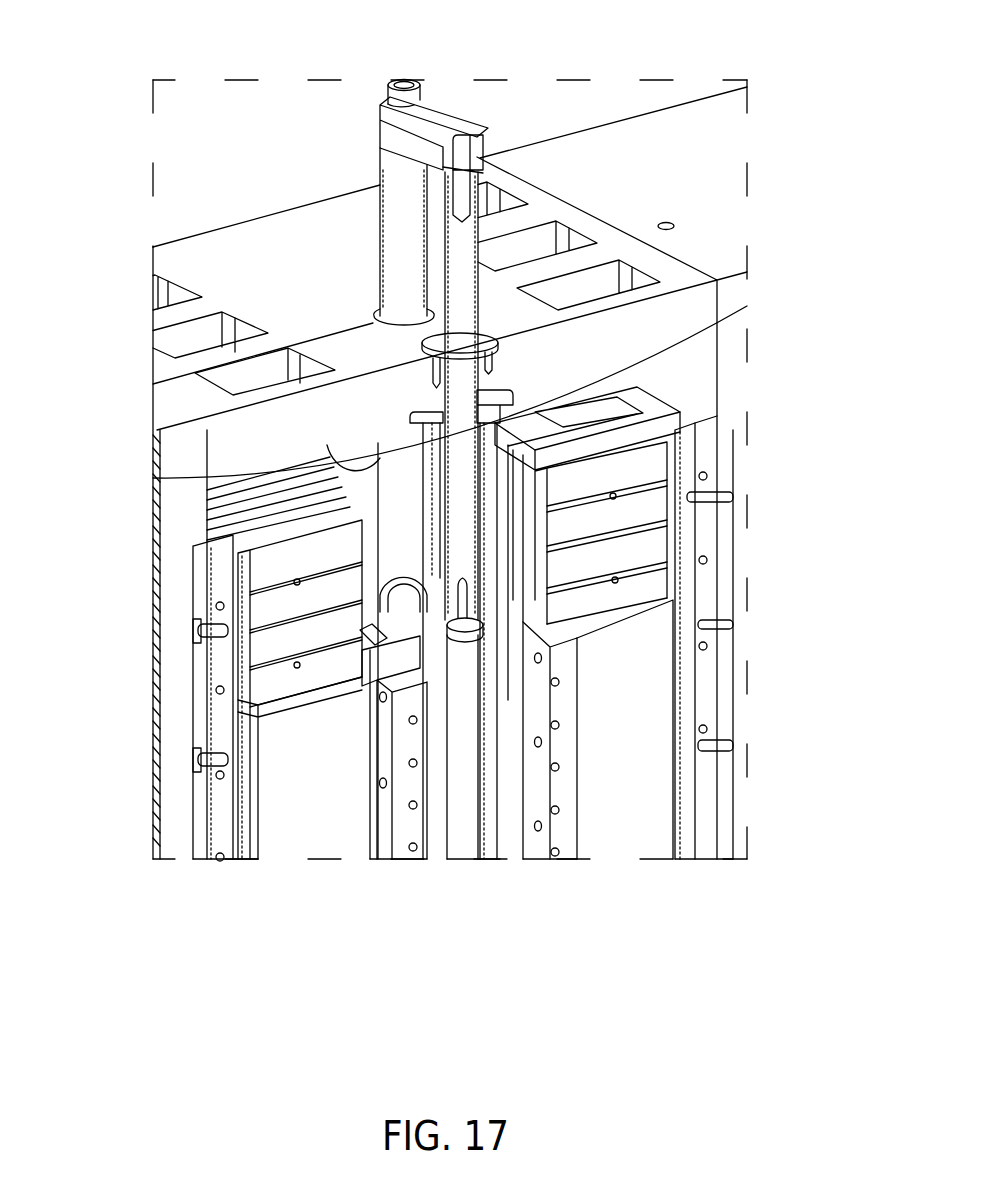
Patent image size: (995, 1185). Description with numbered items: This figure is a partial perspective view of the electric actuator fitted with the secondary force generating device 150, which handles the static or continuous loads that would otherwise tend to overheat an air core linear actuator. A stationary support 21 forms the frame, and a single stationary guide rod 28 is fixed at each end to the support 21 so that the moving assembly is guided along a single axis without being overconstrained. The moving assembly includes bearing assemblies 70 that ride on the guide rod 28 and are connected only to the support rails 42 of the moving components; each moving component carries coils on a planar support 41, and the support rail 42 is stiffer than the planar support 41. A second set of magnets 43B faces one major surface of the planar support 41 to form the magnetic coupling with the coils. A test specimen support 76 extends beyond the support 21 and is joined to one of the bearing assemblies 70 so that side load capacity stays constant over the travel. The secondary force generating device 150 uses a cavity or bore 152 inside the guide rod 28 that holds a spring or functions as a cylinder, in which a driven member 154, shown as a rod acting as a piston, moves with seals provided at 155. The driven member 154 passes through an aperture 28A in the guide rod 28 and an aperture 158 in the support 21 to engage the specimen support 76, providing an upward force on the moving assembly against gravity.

The stationary support 21 is at (605, 140).
The test specimen support 76 is at (470, 148).
The driven member 154 is at (467, 238).
The stationary guide 28 is at (487, 450).
The seals 155 is at (468, 617).
The second set of magnets 43B is at (652, 550).
The planar support 41 is at (658, 617).
The support rail 42 is at (577, 702).
The aperture in support 158 is at (427, 352).
The aperture in guide rod 28A is at (430, 430).
The bearing assembly 70 is at (420, 615).
The secondary force generating device 150 is at (450, 883).
The cavity or bore 152 is at (478, 848).